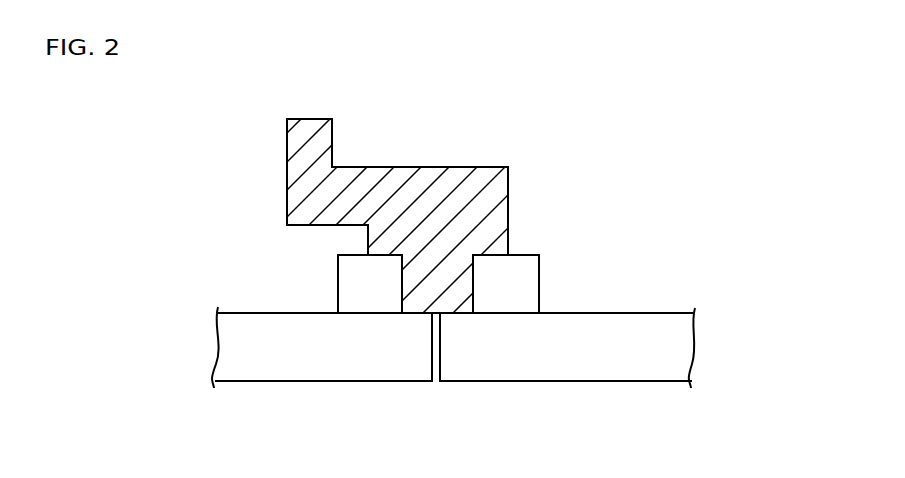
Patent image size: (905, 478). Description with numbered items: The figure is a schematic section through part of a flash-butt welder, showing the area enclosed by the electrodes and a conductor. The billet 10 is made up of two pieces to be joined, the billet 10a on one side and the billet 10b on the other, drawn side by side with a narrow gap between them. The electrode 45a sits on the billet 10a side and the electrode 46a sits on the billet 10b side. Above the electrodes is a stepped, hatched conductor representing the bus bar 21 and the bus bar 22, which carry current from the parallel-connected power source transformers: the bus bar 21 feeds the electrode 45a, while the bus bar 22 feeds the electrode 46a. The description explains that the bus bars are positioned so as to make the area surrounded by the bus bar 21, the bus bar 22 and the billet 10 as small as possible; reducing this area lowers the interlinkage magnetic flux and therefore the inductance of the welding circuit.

The billet 10 is at (625, 408).
The billet 10a is at (385, 370).
The billet 10b is at (520, 370).
The bus bar 21 is at (287, 215).
The bus bar 22 is at (413, 166).
The electrode 45a is at (337, 288).
The electrode 46a is at (538, 290).